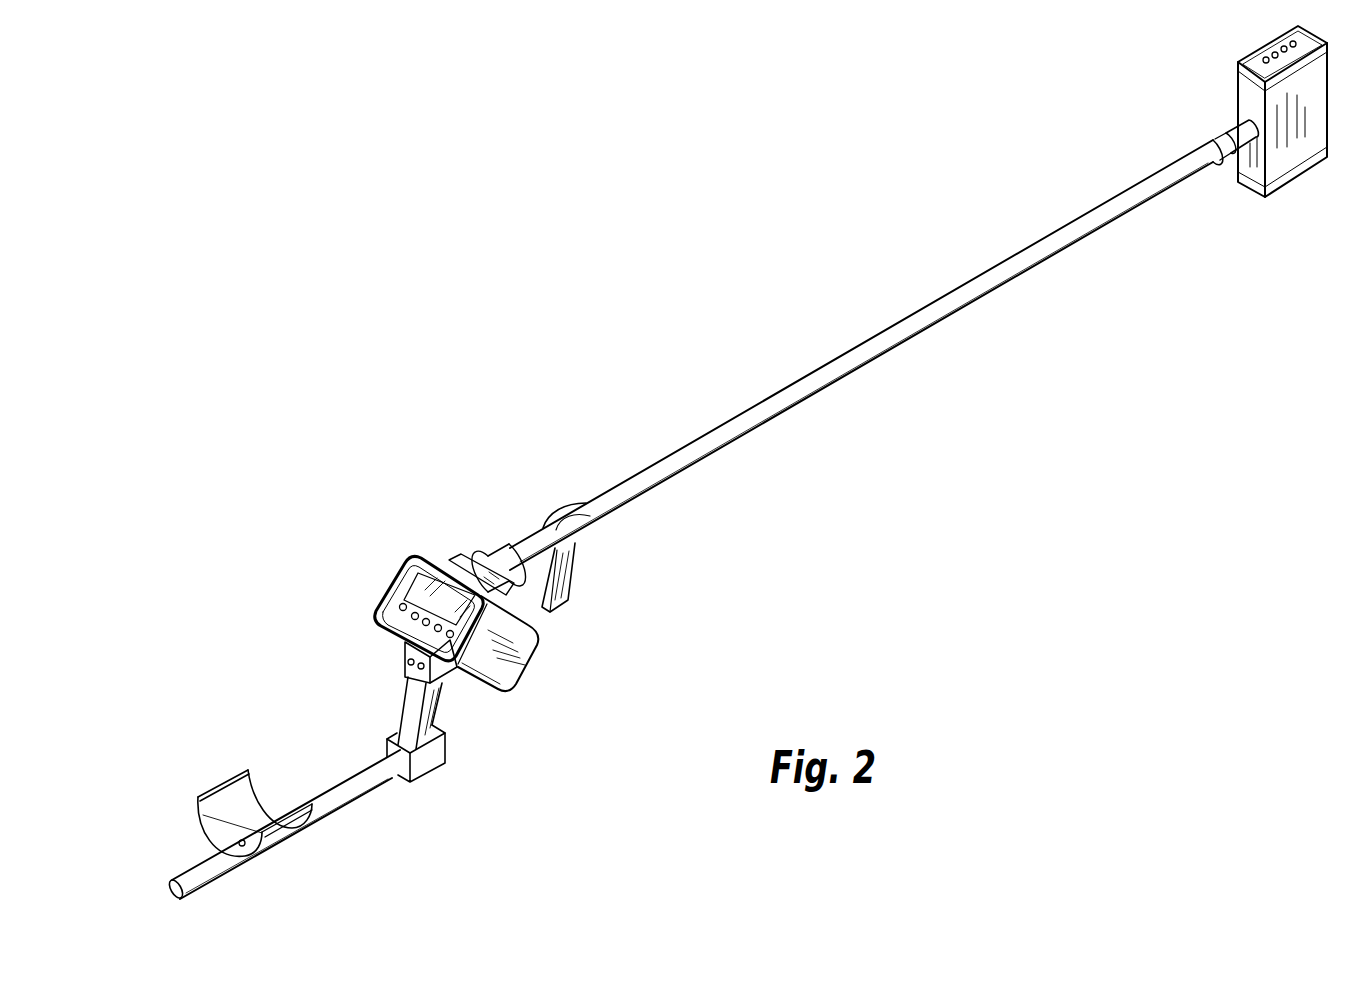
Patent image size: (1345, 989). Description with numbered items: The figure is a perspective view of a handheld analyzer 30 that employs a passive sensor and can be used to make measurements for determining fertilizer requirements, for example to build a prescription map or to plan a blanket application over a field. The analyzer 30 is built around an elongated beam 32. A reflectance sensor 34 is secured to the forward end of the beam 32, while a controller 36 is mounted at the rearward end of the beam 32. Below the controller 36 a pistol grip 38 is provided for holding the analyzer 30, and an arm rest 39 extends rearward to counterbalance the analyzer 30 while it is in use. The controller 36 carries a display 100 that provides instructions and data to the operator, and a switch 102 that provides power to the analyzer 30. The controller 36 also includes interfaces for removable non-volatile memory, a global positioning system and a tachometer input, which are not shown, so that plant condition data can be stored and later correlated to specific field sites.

The handheld analyzer 30 is at (915, 283).
The elongated beam 32 is at (910, 337).
The reflectance sensor 34 is at (1295, 155).
The controller 36 is at (545, 656).
The pistol grip 38 is at (446, 704).
The arm rest 39 is at (286, 852).
The display 100 is at (421, 590).
The switch 102 is at (413, 613).